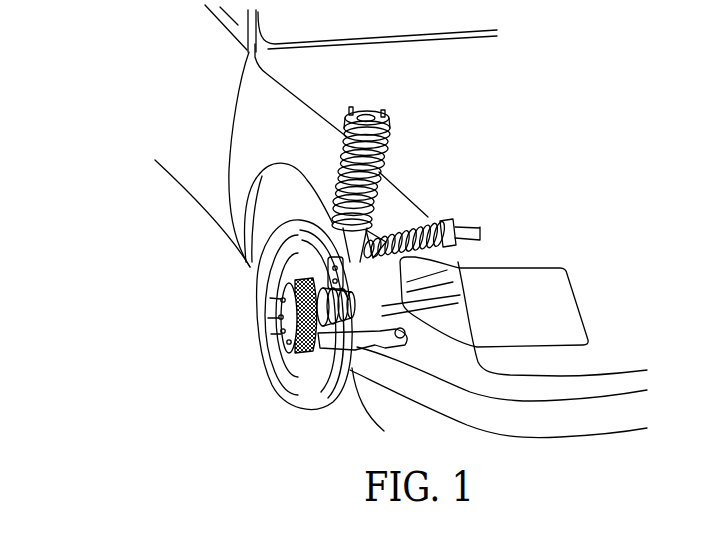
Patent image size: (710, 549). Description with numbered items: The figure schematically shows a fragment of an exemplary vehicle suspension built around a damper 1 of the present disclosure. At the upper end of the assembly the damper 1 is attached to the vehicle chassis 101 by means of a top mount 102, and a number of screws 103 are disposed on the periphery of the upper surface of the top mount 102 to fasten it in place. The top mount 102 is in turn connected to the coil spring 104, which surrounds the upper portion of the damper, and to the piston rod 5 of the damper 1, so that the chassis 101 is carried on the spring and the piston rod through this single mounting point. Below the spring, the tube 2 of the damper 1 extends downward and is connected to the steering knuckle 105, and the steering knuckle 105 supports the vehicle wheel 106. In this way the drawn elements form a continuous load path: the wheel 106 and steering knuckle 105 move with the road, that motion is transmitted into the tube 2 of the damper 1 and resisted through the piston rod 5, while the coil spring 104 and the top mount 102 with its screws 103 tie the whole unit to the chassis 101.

The damper 1 is at (387, 215).
The tube 2 is at (330, 215).
The piston rod 5 is at (386, 178).
The vehicle chassis 101 is at (247, 59).
The top mount 102 is at (389, 135).
The screws 103 is at (383, 118).
The coil spring 104 is at (386, 158).
The steering knuckle 105 is at (320, 274).
The vehicle wheel 106 is at (291, 383).